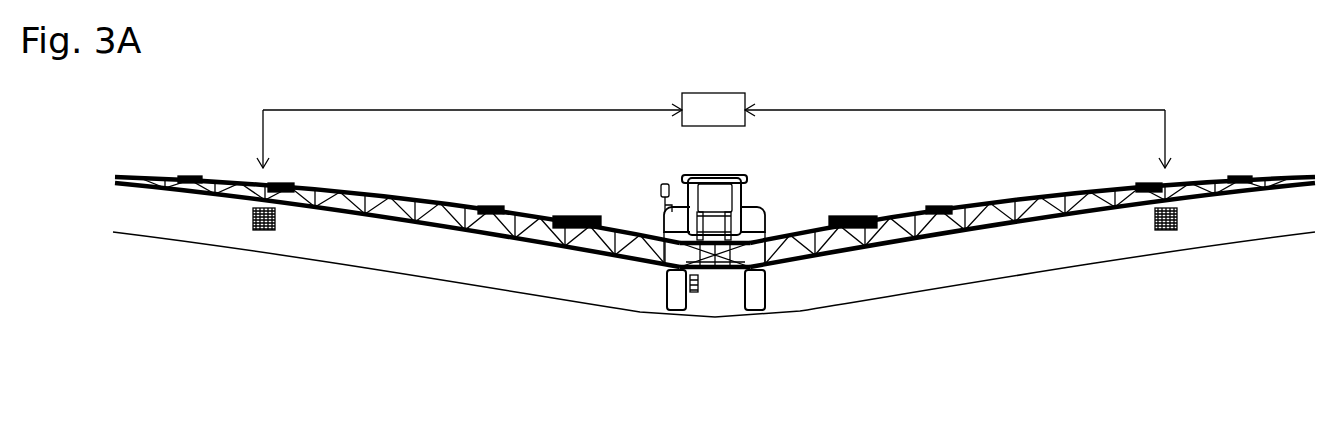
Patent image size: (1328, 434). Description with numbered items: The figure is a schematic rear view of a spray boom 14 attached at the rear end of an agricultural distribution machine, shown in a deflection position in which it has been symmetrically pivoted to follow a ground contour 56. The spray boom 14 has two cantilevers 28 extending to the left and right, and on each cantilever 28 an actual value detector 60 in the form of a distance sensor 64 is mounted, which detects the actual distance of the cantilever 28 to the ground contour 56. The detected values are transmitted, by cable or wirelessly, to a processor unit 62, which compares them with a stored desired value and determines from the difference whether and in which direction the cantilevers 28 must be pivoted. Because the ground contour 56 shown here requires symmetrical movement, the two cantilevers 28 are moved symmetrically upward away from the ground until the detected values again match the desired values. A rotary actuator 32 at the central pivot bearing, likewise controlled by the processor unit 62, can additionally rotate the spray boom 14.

The spray boom 14 is at (724, 297).
The cantilevers 28 is at (484, 242).
The rotary actuator 32 is at (713, 250).
The ground contour 56 is at (327, 268).
The actual value detector 60 is at (723, 283).
The processor unit 62 is at (714, 130).
The distance sensor 64 is at (1228, 305).